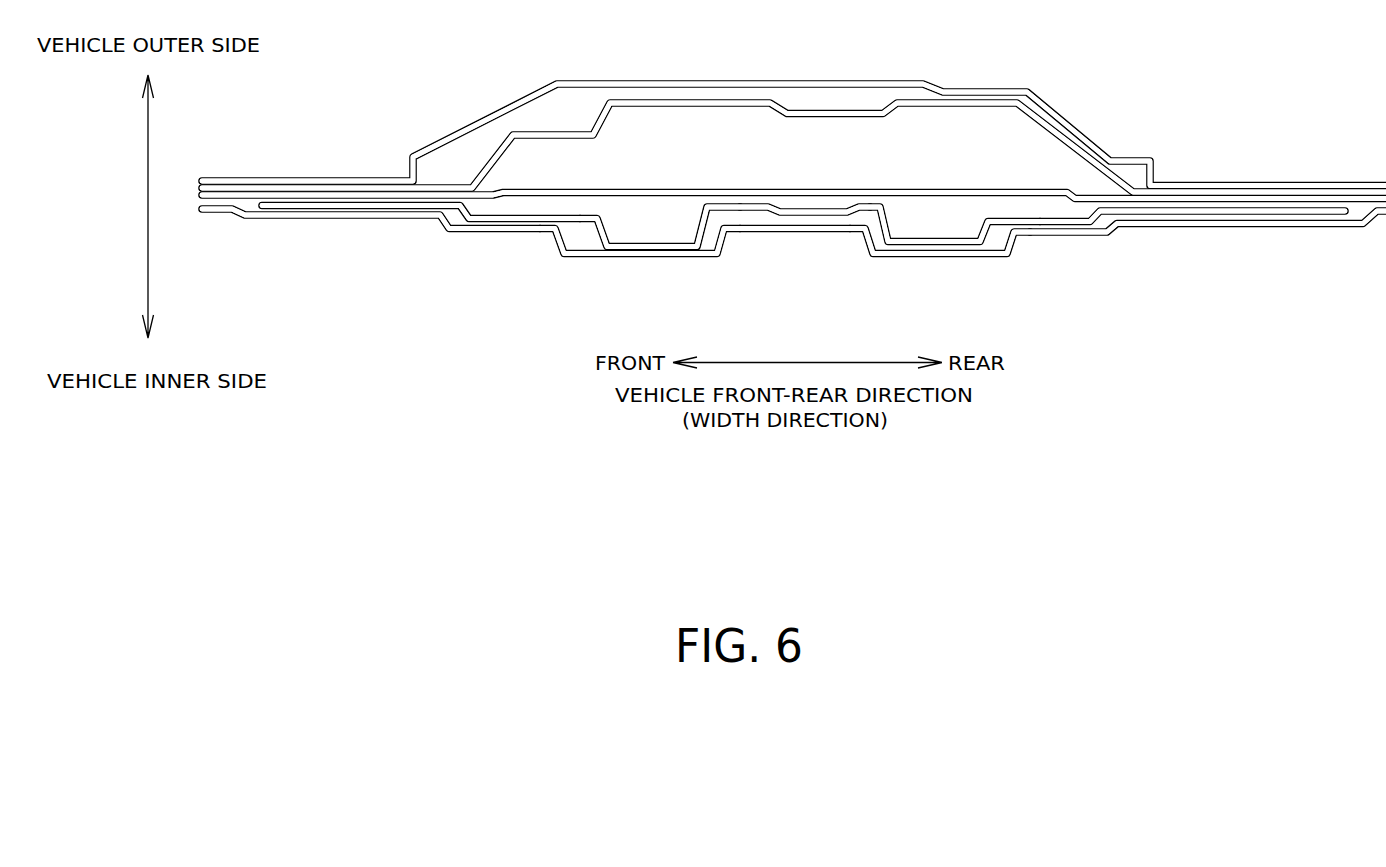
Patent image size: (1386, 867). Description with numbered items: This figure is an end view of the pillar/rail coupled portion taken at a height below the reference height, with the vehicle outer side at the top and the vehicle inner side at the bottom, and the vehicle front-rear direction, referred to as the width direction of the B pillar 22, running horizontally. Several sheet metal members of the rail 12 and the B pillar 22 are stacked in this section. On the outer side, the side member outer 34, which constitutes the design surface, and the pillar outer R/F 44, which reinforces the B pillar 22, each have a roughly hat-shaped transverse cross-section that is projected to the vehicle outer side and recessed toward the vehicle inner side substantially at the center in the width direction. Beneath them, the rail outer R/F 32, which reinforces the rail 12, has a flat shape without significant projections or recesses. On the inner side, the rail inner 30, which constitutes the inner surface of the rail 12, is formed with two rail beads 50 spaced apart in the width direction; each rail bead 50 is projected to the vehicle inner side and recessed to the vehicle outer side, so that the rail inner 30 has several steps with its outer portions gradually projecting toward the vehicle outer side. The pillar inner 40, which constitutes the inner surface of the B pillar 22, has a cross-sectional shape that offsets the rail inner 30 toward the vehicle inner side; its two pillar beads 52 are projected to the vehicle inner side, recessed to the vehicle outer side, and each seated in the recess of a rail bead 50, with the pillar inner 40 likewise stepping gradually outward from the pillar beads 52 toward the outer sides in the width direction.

The rail 12 is at (794, 184).
The B pillar 22 is at (794, 164).
The rail inner 30 is at (329, 221).
The rail outer R/F 32 is at (742, 188).
The side member outer 34 is at (474, 131).
The pillar inner 40 is at (451, 207).
The pillar outer R/F 44 is at (547, 131).
The rail bead 50 is at (610, 258).
The pillar bead 52 is at (647, 240).